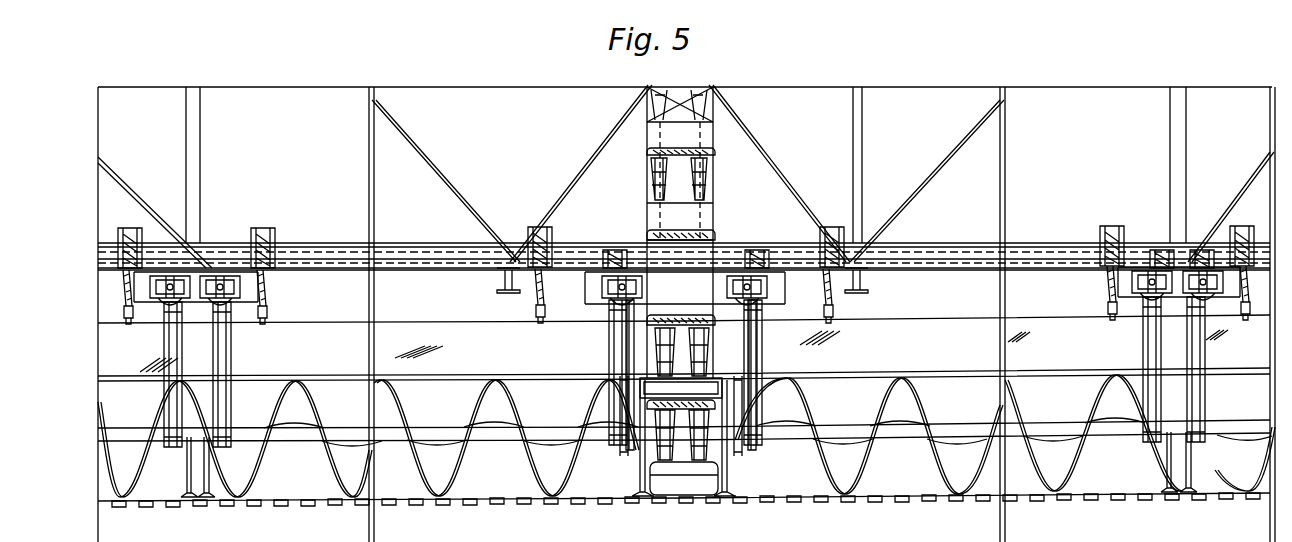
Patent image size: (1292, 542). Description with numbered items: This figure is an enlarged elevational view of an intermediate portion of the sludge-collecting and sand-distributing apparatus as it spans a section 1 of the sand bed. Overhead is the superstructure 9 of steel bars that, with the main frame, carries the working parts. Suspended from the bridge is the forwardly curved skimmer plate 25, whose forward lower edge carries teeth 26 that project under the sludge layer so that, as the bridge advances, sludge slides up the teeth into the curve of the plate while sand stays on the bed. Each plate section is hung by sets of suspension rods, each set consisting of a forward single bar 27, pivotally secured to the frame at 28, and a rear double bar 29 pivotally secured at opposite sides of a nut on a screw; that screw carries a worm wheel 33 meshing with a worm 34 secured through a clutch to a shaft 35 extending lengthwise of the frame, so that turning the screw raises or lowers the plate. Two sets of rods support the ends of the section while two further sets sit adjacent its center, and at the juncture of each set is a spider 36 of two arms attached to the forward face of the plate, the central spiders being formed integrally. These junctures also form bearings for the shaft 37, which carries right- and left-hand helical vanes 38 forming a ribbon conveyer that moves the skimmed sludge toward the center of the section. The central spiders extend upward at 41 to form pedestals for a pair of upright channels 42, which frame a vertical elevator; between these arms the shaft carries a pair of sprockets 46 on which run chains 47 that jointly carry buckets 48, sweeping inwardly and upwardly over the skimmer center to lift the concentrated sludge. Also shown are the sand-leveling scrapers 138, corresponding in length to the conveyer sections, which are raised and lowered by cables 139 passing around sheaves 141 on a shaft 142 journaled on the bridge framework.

The section 1 is at (590, 530).
The superstructure 9 is at (612, 128).
The forwardly curved plate 25 is at (402, 478).
The teeth 26 is at (318, 506).
The forward single bar 27 is at (178, 302).
The pivot 28 is at (608, 294).
The rear double bar 29 is at (208, 304).
The worm wheel 33 is at (622, 294).
The worm 34 is at (627, 240).
The shaft 35 is at (462, 268).
The spider 36 is at (203, 482).
The shaft 37 is at (496, 439).
The vanes 38 is at (338, 463).
The upward extension 41 is at (643, 417).
The upright channels 42 is at (653, 194).
The sprockets 46 is at (696, 464).
The chains 47 is at (652, 340).
The buckets 48 is at (714, 219).
The scrapers 138 is at (337, 315).
The cables 139 is at (266, 304).
The sheaves 141 is at (248, 232).
The shaft 142 is at (280, 251).